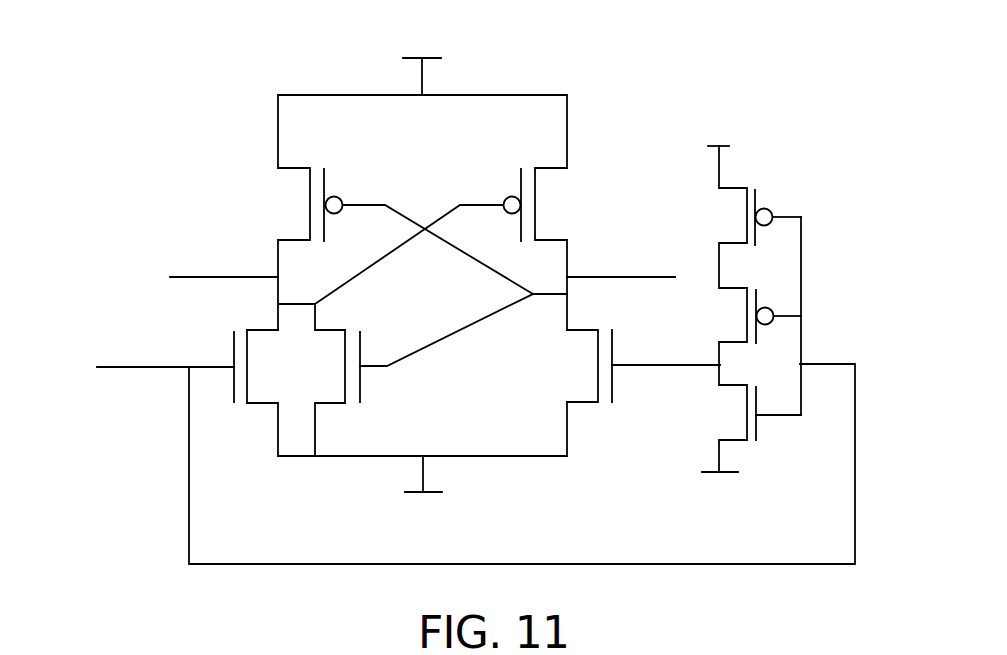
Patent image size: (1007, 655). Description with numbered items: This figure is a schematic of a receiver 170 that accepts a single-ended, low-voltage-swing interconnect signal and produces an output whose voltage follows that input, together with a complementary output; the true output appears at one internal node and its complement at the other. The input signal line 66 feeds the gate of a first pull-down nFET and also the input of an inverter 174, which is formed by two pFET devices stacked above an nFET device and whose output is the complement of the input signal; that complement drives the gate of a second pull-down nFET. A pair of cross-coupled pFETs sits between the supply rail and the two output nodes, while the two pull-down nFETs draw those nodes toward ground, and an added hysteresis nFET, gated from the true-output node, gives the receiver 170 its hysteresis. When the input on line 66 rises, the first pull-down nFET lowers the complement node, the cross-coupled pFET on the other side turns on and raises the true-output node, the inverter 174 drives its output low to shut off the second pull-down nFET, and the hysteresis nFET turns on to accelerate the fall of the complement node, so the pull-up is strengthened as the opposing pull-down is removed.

The receiver 170 is at (183, 108).
The inverter 174 is at (824, 176).
The Q input signal line 66 is at (135, 367).